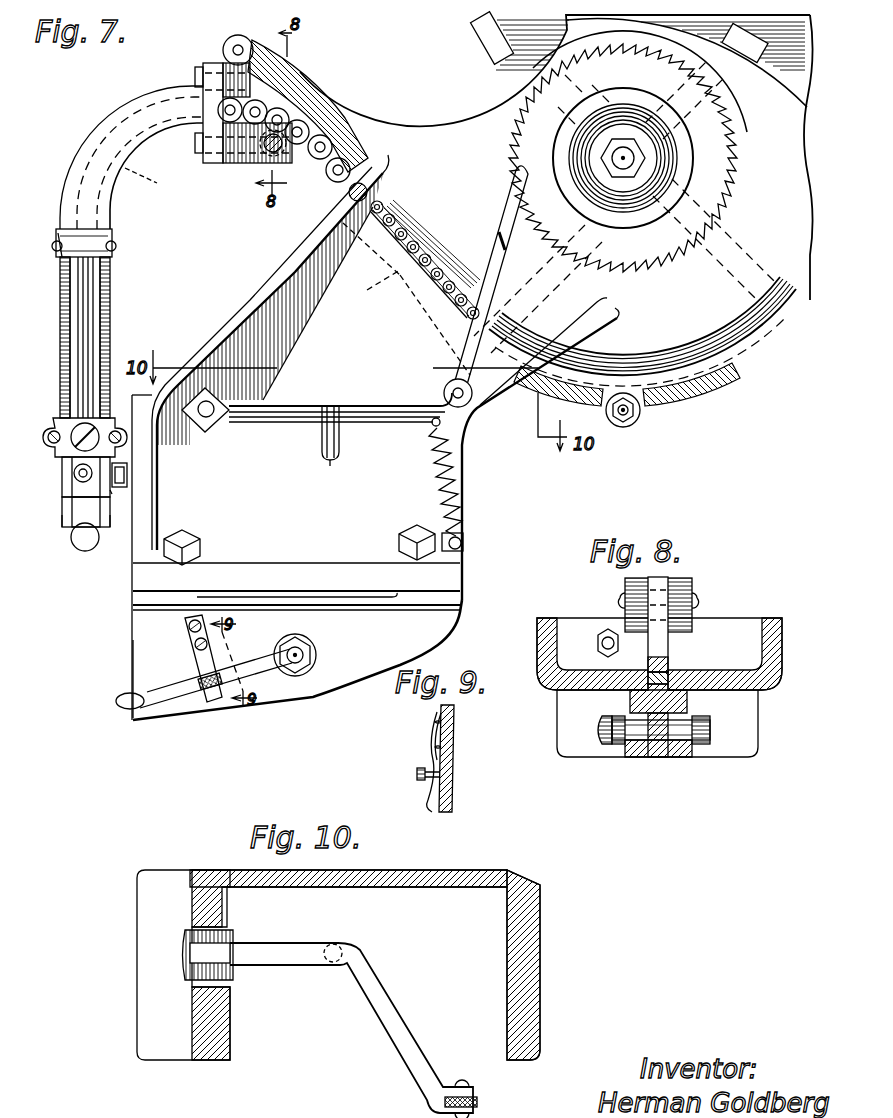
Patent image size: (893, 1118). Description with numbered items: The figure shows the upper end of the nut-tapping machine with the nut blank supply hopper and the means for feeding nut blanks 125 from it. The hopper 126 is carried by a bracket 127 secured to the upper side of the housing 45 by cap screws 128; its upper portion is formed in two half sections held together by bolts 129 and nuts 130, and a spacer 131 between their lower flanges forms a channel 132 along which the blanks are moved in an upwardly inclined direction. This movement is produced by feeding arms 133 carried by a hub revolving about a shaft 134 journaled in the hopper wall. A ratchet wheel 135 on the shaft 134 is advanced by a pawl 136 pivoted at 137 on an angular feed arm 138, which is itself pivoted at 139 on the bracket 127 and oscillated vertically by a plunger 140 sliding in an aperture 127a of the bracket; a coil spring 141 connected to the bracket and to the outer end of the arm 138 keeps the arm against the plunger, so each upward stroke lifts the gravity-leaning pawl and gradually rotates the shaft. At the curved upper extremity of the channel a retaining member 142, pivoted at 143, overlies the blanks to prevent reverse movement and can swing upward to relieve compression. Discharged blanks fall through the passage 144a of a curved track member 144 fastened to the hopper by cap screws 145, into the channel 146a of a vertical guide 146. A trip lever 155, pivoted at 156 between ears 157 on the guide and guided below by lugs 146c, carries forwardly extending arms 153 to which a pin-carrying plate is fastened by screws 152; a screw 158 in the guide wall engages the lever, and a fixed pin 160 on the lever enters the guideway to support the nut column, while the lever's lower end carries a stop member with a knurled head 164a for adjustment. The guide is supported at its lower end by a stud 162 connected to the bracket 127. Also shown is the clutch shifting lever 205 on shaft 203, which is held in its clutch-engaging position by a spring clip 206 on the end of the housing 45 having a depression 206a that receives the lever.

In FIG. 7, the housing 45 is at (122, 667).
In FIG. 9, the housing 45 is at (455, 709).
In FIG. 7, the nut blanks 125 is at (398, 272).
In FIG. 8, the nut blanks 125 is at (670, 673).
In FIG. 7, the hopper 126 is at (477, 117).
In FIG. 8, the hopper 126 is at (543, 620).
In FIG. 7, the bracket 127 is at (283, 267).
In FIG. 10, the bracket 127 is at (148, 938).
In FIG. 7, the aperture 127a is at (332, 467).
In FIG. 7, the cap screws 128 is at (198, 537).
In FIG. 7, the bolts 129 is at (632, 416).
In FIG. 8, the bolts 129 is at (712, 748).
In FIG. 7, the nuts 130 is at (628, 414).
In FIG. 8, the nuts 130 is at (618, 745).
In FIG. 7, the spacer 131 is at (313, 180).
In FIG. 8, the spacer 131 is at (657, 757).
In FIG. 8, the channel 132 is at (687, 698).
In FIG. 7, the feeding arms 133 is at (483, 22).
In FIG. 7, the shaft 134 is at (623, 147).
In FIG. 7, the ratchet wheel 135 is at (730, 170).
In FIG. 7, the pawl 136 is at (497, 247).
In FIG. 10, the pawl 136 is at (478, 1101).
In FIG. 7, the pivot 137 is at (468, 398).
In FIG. 10, the pivot 137 is at (461, 1082).
In FIG. 7, the feed arm 138 is at (313, 402).
In FIG. 10, the feed arm 138 is at (393, 1030).
In FIG. 7, the pivot 139 is at (213, 412).
In FIG. 10, the pivot 139 is at (217, 980).
In FIG. 7, the plunger 140 is at (340, 446).
In FIG. 10, the plunger 140 is at (345, 947).
In FIG. 7, the coil spring 141 is at (457, 477).
In FIG. 7, the retaining member 142 is at (320, 113).
In FIG. 8, the retaining member 142 is at (668, 672).
In FIG. 7, the pivot 143 is at (240, 47).
In FIG. 8, the pivot 143 is at (697, 594).
In FIG. 7, the curved track member 144 is at (115, 125).
In FIG. 7, the passage 144a is at (159, 189).
In FIG. 7, the cap screws 145 is at (197, 75).
In FIG. 7, the vertical guide 146 is at (110, 287).
In FIG. 7, the channel 146a is at (125, 493).
In FIG. 7, the lugs 146c is at (66, 513).
In FIG. 7, the screws 152 is at (70, 468).
In FIG. 7, the arms 153 is at (48, 427).
In FIG. 7, the trip lever 155 is at (97, 318).
In FIG. 7, the pivot 156 is at (112, 247).
In FIG. 7, the ears 157 is at (58, 233).
In FIG. 7, the screw 158 is at (83, 430).
In FIG. 7, the pin 160 is at (78, 480).
In FIG. 7, the stud 162 is at (127, 480).
In FIG. 7, the knurled head 164a is at (82, 541).
In FIG. 7, the shaft 203 is at (307, 667).
In FIG. 7, the clutch shifting lever 205 is at (180, 695).
In FIG. 9, the clutch shifting lever 205 is at (417, 773).
In FIG. 7, the spring clip 206 is at (218, 700).
In FIG. 9, the spring clip 206 is at (433, 762).
In FIG. 9, the depression 206a is at (443, 780).